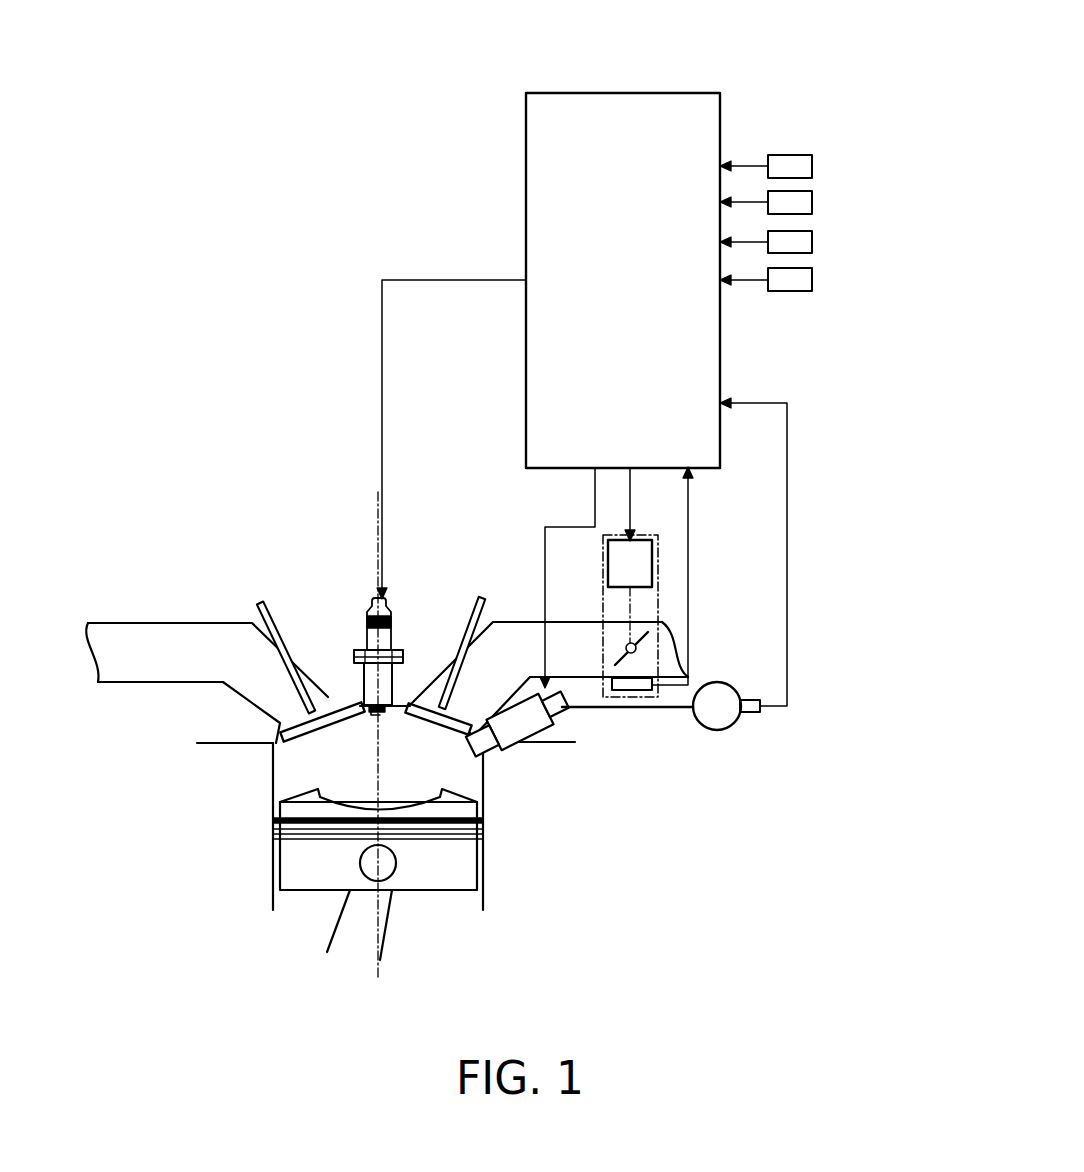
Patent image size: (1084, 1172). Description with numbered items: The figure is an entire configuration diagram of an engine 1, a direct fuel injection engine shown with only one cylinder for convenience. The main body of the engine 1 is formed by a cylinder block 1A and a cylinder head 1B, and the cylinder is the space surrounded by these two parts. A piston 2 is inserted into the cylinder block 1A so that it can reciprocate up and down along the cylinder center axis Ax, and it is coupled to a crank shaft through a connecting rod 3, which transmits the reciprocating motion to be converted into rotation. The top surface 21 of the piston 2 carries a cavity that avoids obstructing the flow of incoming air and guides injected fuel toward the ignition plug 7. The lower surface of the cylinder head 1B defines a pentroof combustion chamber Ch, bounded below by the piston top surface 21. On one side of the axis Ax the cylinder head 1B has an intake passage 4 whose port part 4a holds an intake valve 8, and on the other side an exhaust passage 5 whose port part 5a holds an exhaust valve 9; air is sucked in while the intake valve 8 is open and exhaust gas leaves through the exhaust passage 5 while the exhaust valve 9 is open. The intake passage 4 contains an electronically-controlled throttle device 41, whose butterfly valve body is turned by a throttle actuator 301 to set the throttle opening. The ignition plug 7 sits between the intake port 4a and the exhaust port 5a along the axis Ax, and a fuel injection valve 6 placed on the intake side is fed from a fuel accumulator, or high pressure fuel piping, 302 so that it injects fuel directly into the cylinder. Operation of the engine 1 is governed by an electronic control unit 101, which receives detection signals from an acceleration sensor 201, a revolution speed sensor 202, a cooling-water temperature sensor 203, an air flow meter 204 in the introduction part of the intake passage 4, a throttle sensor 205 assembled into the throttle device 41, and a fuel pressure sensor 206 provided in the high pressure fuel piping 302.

The engine 1 is at (367, 674).
The cylinder block 1A is at (350, 826).
The cylinder head 1B is at (386, 727).
The piston 2 is at (343, 834).
The top surface of the piston 21 is at (295, 798).
The connecting rod 3 is at (390, 922).
The intake passage 4 is at (557, 628).
The port part (intake port) of the intake passage 4a is at (427, 697).
The exhaust passage 5 is at (170, 628).
The port part (exhaust port) of the exhaust passage 5a is at (323, 698).
The fuel injection valve 6 is at (507, 750).
The ignition plug 7 is at (366, 620).
The intake valve 8 is at (478, 608).
The exhaust valve 9 is at (268, 605).
The electronically-controlled throttle device 41 is at (672, 618).
The electronic control unit 101 is at (678, 92).
The acceleration sensor 201 is at (815, 166).
The revolution speed sensor 202 is at (815, 202).
The cooling-water temperature sensor 203 is at (815, 242).
The air flow meter 204 is at (815, 280).
The throttle sensor 205 is at (635, 697).
The fuel pressure sensor 206 is at (750, 699).
The throttle actuator 301 is at (647, 538).
The fuel accumulator (high pressure fuel piping) 302 is at (680, 711).
The cylinder center axis Ax is at (376, 503).
The combustion chamber Ch is at (347, 760).